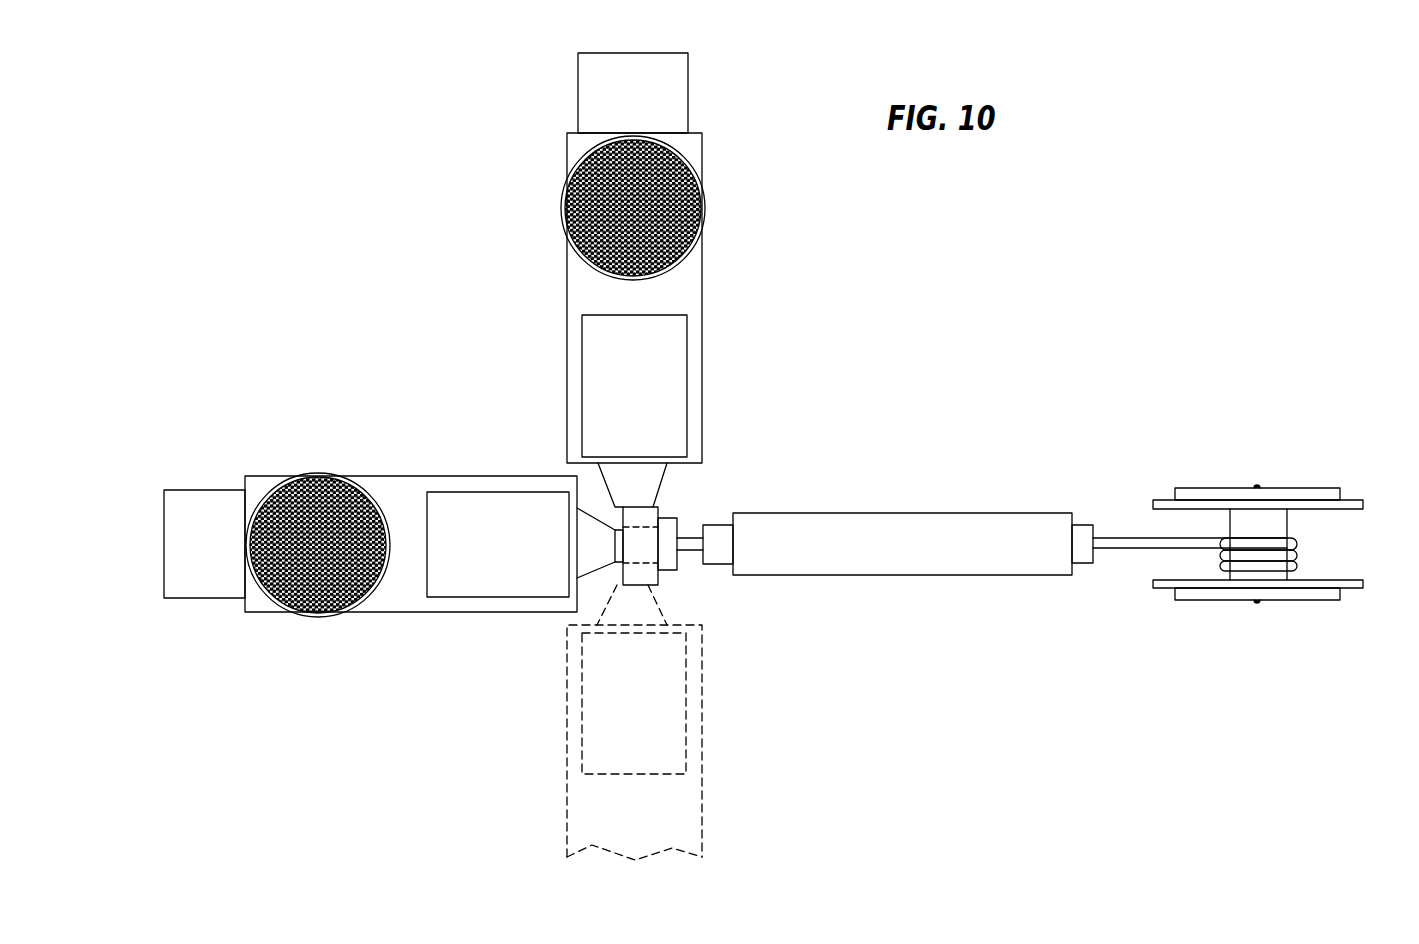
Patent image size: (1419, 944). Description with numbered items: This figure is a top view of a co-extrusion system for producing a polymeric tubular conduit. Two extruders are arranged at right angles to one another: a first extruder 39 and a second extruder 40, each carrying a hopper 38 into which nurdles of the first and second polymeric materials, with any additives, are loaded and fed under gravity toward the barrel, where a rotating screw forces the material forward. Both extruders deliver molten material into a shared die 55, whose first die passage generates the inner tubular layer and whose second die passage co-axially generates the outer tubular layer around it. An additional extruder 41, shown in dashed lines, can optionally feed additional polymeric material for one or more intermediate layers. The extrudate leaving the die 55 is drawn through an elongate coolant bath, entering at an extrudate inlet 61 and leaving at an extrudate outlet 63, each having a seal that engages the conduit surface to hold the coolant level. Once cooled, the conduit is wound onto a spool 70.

The hopper 38 is at (693, 163).
The second extruder 40 is at (705, 313).
The first extruder 39 is at (432, 472).
The die 55 is at (623, 570).
The extrudate inlet 61 is at (722, 570).
The extrudate outlet 63 is at (1083, 518).
The spool 70 is at (1273, 523).
The additional extruder 41 is at (707, 775).